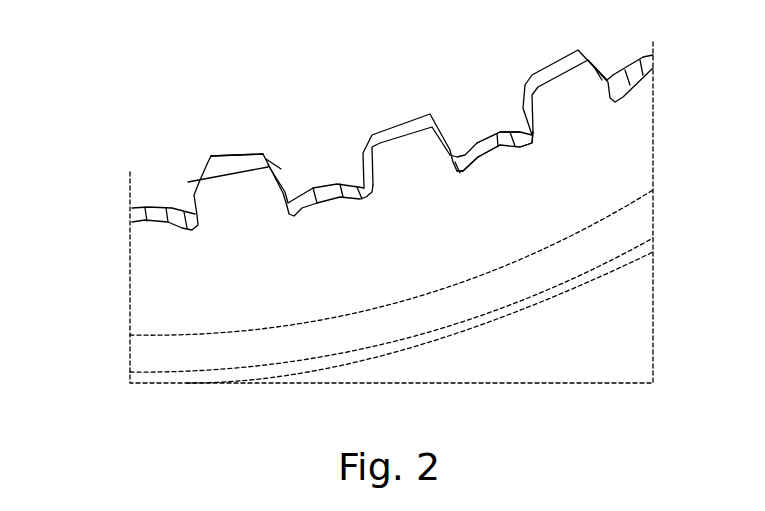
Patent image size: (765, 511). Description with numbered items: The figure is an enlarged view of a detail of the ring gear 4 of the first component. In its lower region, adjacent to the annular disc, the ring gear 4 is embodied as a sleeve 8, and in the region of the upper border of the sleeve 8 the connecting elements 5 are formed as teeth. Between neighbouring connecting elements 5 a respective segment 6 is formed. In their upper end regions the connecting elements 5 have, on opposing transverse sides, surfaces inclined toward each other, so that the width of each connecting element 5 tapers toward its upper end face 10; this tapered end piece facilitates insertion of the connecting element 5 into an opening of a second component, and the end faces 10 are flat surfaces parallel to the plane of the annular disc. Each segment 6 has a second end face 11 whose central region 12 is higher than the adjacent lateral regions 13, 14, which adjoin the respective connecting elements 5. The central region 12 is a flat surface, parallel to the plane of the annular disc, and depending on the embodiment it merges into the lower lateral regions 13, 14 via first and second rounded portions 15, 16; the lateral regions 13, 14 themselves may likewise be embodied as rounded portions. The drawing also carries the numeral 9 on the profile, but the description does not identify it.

The ring gear 4 is at (108, 287).
The connecting element 5 is at (226, 183).
The segment 6 is at (333, 227).
The sleeve 8 is at (412, 268).
The surface layer 9 is at (206, 180).
The upper end face 10 is at (236, 162).
The second end face 11 is at (322, 170).
The central region 12 is at (493, 133).
The lateral region 13 is at (540, 150).
The lateral region 14 is at (461, 168).
The first rounded portion 15 is at (484, 158).
The second rounded portion 16 is at (503, 128).